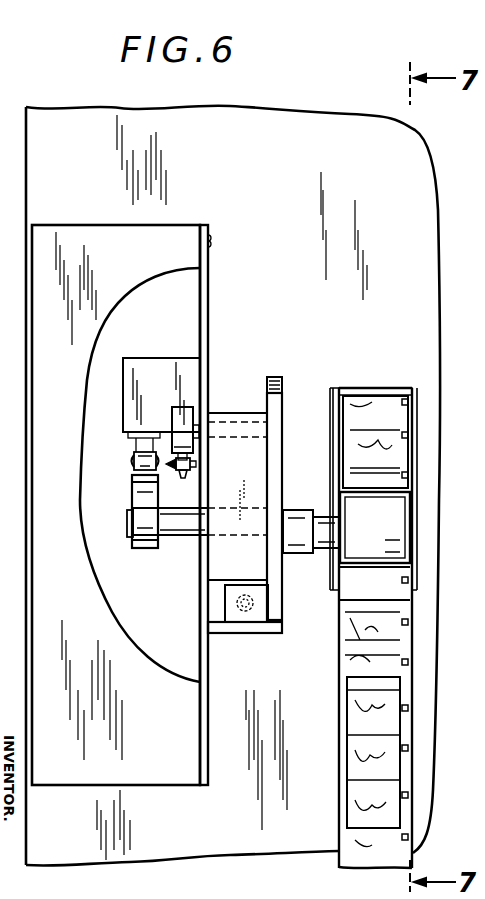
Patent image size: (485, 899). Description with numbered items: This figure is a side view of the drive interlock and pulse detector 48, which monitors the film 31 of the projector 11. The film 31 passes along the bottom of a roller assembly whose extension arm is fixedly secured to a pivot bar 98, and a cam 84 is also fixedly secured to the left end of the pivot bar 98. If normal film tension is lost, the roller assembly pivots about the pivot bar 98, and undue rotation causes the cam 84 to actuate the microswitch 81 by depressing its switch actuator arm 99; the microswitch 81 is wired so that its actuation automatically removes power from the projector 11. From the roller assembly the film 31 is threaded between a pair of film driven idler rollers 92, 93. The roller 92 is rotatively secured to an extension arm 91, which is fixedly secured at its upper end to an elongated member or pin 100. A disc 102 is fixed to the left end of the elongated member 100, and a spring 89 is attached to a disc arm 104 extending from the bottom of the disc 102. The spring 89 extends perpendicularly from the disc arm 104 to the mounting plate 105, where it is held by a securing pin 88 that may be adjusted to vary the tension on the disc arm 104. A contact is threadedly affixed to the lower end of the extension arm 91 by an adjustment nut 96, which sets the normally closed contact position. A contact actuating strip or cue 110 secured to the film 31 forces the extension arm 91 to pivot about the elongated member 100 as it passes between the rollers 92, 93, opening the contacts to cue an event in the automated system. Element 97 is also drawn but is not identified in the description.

The projector 11 is at (256, 171).
The drive interlock and pulse detector 48 is at (200, 217).
The mounting plate 105 is at (210, 288).
The microswitch 81 is at (125, 382).
The disc 102 is at (182, 407).
The elongated member or pin 100 is at (283, 420).
The switch actuator arm 99 is at (134, 456).
The cam 84 is at (138, 495).
The disc arm 104 is at (184, 485).
The securing pin 88 is at (196, 464).
The spring 89 is at (190, 466).
The extension arm 91 is at (280, 488).
The film driven idler roller 93 is at (410, 476).
The film driven idler roller 92 is at (398, 520).
The pivot bar 98 is at (188, 536).
The base plate 97 is at (268, 630).
The adjustment nut 96 is at (246, 613).
The film 31 is at (340, 668).
The contact actuating strip or cue 110 is at (352, 700).